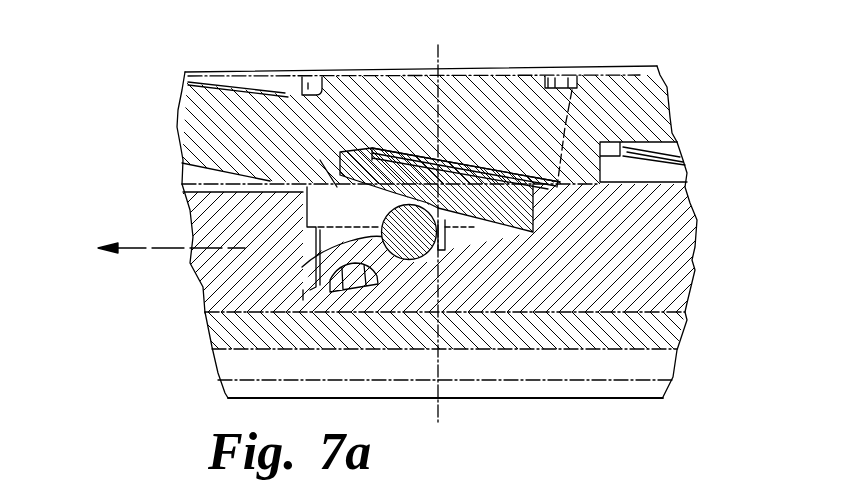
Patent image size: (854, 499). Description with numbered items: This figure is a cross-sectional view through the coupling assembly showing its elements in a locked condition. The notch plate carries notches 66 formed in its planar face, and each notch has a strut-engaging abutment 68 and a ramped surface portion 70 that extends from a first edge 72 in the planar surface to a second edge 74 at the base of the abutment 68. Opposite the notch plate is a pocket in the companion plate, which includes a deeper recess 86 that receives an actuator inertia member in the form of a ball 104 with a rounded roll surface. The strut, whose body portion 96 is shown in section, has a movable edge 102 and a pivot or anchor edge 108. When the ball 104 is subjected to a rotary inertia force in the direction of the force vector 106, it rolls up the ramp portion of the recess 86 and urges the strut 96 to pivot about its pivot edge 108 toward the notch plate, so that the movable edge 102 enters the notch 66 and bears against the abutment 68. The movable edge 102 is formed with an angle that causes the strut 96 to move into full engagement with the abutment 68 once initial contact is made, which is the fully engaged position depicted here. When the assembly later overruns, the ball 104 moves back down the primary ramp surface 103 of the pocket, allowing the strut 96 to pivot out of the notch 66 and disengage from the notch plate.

The notches 66 is at (626, 164).
The strut-engaging abutment 68 is at (343, 160).
The ramped surface portion 70 is at (642, 148).
The first edge 72 is at (573, 77).
The second edge 74 is at (340, 187).
The recess 86 is at (332, 284).
The strut body portion 96 is at (463, 190).
The movable edge 102 is at (342, 176).
The primary ramp surface 103 is at (397, 260).
The ball 104 is at (302, 267).
The force vector 106 is at (145, 247).
The pivot edge 108 is at (530, 230).